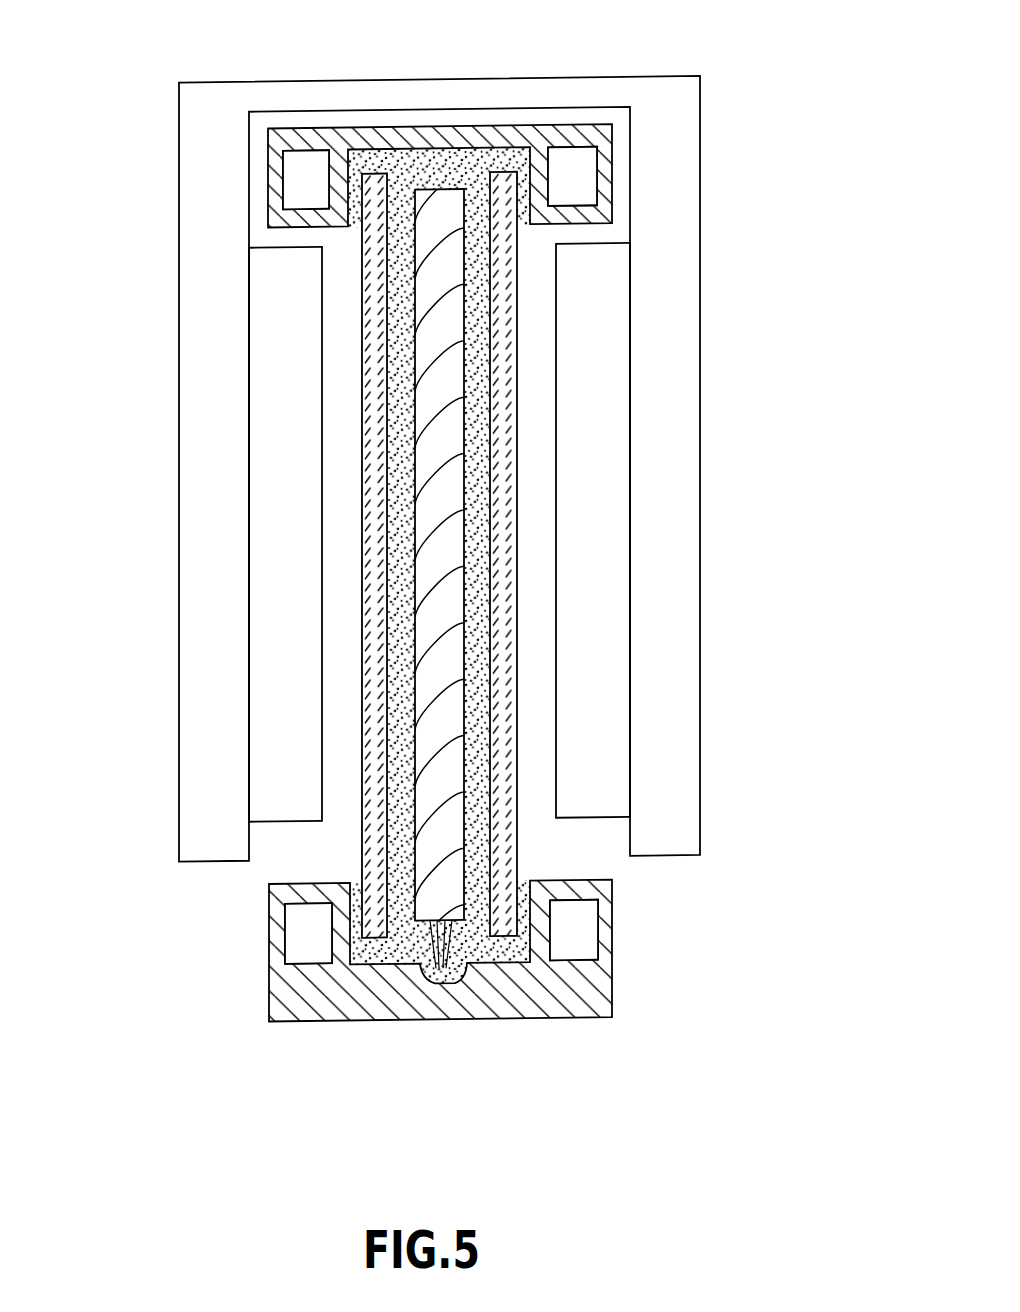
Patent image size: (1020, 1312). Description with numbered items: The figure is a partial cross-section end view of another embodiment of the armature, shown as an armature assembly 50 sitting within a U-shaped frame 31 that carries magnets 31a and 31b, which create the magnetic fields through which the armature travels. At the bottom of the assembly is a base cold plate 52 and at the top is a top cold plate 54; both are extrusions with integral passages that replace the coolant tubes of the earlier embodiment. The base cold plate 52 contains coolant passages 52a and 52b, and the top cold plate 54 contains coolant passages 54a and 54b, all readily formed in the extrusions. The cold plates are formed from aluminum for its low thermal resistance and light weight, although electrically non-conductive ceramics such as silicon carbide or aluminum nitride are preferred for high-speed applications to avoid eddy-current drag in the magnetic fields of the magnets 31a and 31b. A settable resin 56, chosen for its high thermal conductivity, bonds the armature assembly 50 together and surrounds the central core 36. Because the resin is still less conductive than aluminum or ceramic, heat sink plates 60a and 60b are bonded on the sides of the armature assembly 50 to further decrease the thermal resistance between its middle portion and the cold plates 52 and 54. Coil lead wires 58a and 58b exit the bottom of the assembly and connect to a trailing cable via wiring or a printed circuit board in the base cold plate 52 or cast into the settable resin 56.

The U-shaped frame 31 is at (178, 724).
The magnet 31a is at (273, 572).
The magnet 31b is at (607, 412).
The helical core rod 36 is at (449, 340).
The armature assembly 50 is at (445, 580).
The base cold plate 52 is at (579, 1025).
The coolant passage 52a is at (300, 937).
The coolant passage 52b is at (577, 942).
The top cold plate 54 is at (538, 149).
The coolant passage 54a is at (302, 172).
The coolant passage 54b is at (577, 172).
The settable resin 56 is at (403, 597).
The coil lead wire 58a is at (437, 976).
The coil lead wire 58b is at (470, 986).
The heat sink plate 60a is at (363, 793).
The heat sink plate 60b is at (507, 683).